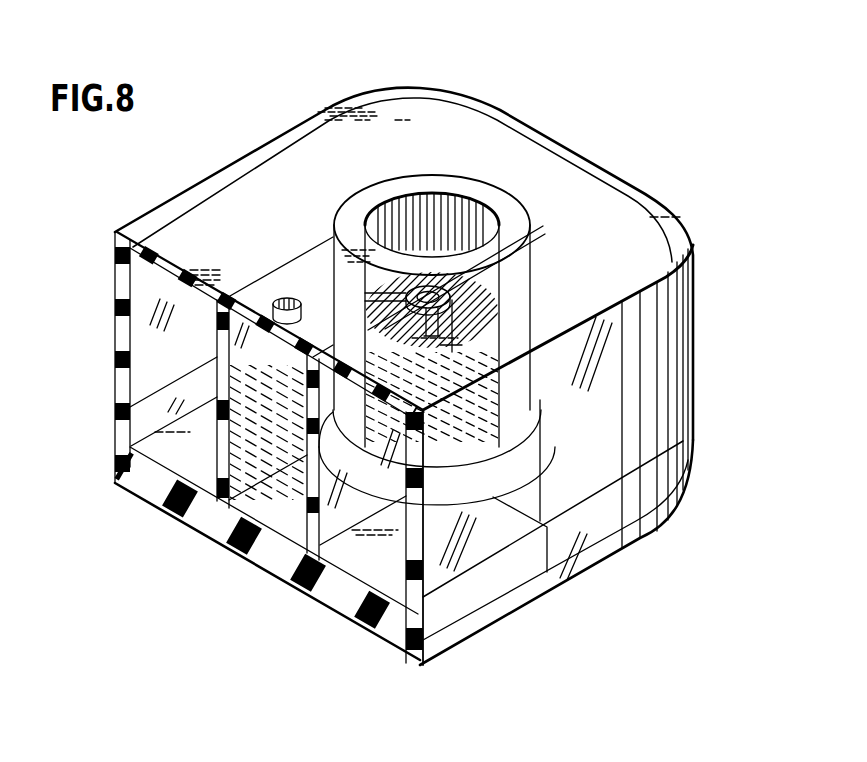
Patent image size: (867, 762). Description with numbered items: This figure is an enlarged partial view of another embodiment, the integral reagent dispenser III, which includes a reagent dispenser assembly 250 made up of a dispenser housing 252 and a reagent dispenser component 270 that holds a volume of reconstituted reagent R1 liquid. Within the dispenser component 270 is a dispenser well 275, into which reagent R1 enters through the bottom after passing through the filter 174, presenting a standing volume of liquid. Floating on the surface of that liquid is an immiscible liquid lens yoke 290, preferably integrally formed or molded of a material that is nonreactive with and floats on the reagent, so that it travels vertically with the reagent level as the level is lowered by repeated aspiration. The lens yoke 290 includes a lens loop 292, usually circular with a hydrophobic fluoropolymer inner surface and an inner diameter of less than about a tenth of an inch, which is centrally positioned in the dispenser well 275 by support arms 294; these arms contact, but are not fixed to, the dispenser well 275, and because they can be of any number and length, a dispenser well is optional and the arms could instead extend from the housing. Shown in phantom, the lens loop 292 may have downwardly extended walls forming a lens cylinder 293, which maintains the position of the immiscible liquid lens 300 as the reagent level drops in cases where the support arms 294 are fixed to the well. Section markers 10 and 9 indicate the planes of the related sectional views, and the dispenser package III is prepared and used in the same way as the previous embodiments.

The reagent dispenser assembly 250 is at (196, 165).
The dispenser housing 252 is at (694, 282).
The reagent dispenser component 270 is at (407, 82).
The dispenser well 275 is at (379, 186).
The immiscible liquid lens yoke 290 is at (431, 285).
The immiscible liquid lens 300 is at (476, 274).
The lens loop 292 is at (476, 284).
The lens cylinder 293 is at (452, 327).
The support arms 294 is at (455, 343).
The filter 174 is at (516, 476).
The section line 10- 10 is at (288, 299).
The section line 9- 9 is at (668, 142).
The integral reagent dispenser III is at (298, 82).
The reagent R1 is at (248, 462).